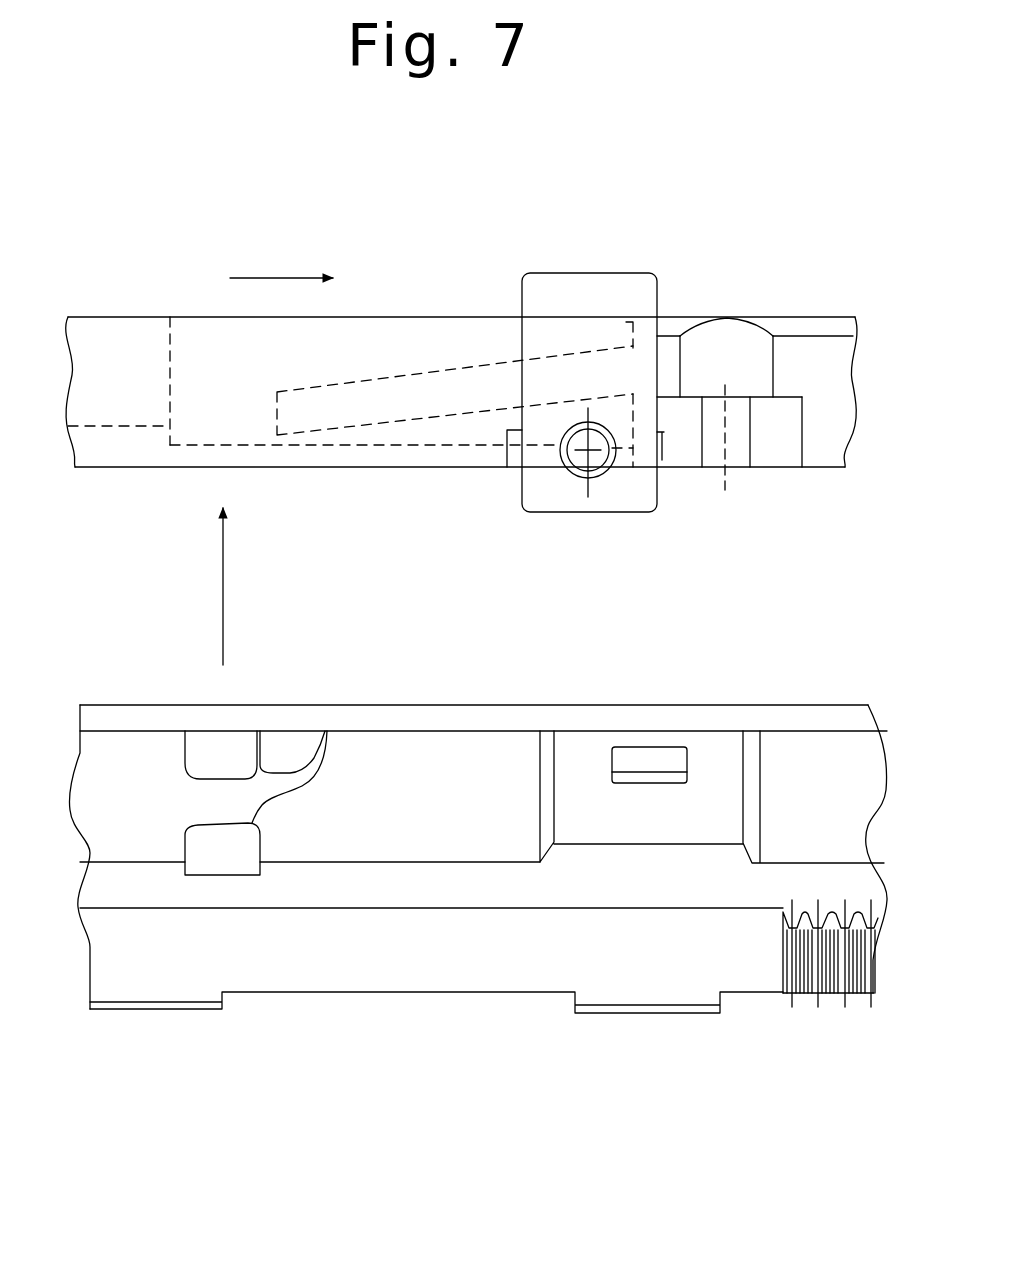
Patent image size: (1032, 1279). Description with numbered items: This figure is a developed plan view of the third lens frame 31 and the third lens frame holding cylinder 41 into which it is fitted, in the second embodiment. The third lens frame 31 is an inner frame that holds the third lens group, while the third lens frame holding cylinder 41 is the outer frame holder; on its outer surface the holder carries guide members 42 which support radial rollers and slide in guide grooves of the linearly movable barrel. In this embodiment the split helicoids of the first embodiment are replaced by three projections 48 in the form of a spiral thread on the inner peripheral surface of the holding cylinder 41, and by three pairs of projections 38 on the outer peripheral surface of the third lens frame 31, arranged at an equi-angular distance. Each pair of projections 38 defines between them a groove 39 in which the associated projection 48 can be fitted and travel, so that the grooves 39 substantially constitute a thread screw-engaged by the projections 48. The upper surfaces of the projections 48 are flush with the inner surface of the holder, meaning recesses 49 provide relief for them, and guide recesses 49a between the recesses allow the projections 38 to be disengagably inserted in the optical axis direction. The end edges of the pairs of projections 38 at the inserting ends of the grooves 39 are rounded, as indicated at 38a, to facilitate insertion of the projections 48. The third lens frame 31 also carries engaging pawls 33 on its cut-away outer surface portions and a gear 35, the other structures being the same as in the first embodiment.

The third lens frame holding cylinder 41 is at (122, 345).
The guide recess 49a is at (180, 368).
The recess 49 is at (340, 355).
The projection 48 is at (395, 403).
The guide member 42 is at (650, 292).
The groove 39 is at (223, 798).
The rounded end edge 38a is at (327, 731).
The projection 38 is at (203, 766).
The engaging pawl 33 is at (655, 762).
The third lens frame 31 is at (477, 962).
The gear 35 is at (833, 984).